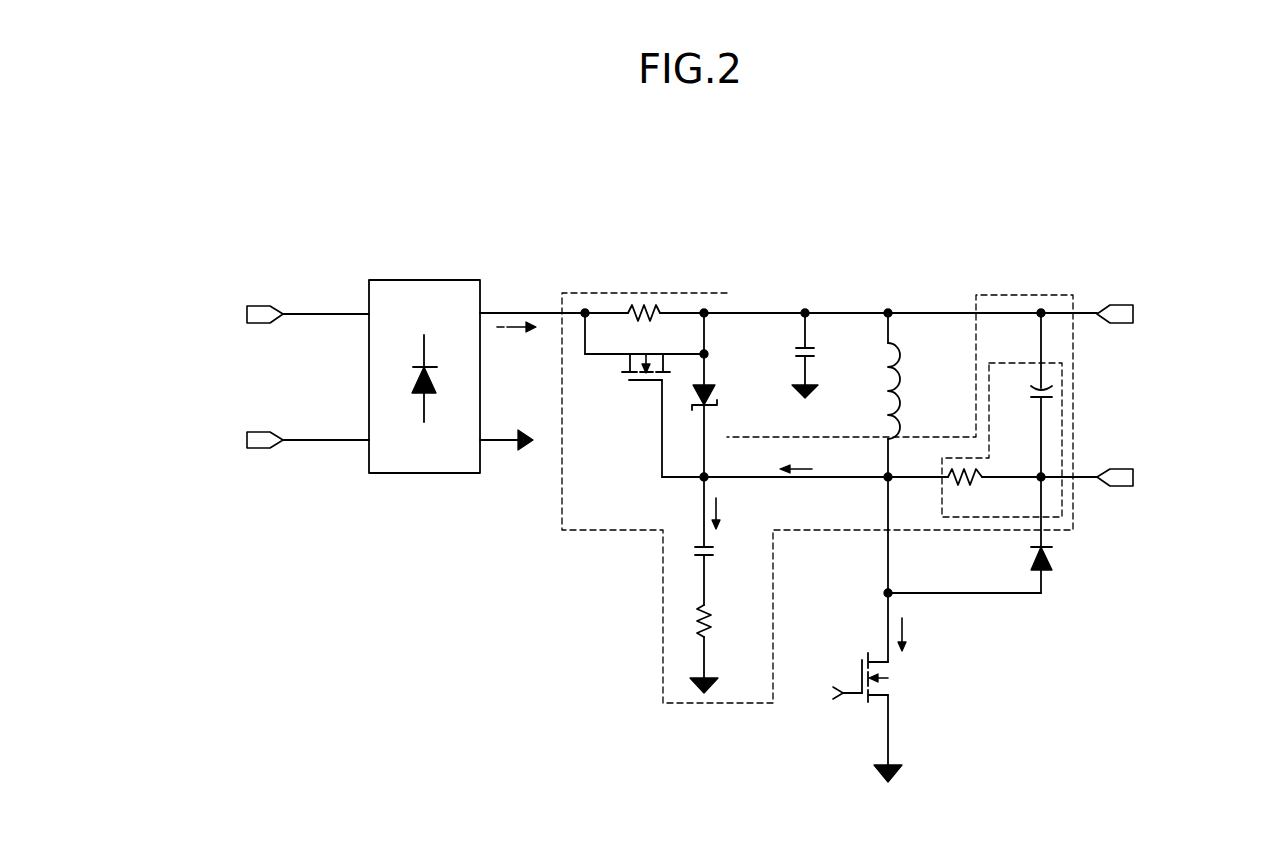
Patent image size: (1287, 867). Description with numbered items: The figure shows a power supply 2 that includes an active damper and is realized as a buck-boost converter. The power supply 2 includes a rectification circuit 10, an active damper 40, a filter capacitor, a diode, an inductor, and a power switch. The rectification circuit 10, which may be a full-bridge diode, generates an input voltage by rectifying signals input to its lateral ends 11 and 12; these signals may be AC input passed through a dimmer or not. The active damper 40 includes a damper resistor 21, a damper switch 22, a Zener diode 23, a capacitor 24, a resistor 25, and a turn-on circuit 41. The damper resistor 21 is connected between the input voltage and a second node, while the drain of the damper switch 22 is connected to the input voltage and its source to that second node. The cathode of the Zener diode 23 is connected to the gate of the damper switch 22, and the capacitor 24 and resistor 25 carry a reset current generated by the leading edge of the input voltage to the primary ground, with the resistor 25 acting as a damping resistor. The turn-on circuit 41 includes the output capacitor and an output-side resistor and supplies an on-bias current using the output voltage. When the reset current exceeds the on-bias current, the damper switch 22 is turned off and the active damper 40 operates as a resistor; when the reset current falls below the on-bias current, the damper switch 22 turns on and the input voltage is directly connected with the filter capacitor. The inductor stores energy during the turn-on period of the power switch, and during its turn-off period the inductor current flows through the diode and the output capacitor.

The power supply 2 is at (762, 213).
The rectification circuit 10 is at (423, 279).
The lateral end 11 is at (263, 305).
The lateral end 12 is at (263, 431).
The damper resistor 21 is at (645, 303).
The damper switch 22 is at (640, 384).
The Zener diode 23 is at (713, 386).
The capacitor 24 is at (718, 550).
The resistor 25 is at (718, 620).
The active damper 40 is at (695, 293).
The turn-on circuit 41 is at (1007, 362).